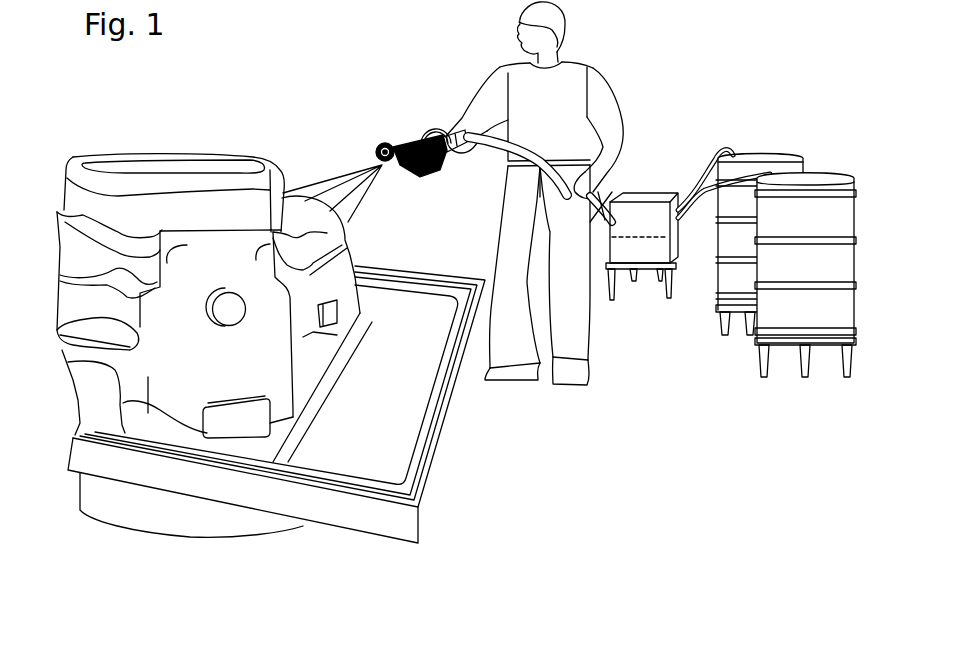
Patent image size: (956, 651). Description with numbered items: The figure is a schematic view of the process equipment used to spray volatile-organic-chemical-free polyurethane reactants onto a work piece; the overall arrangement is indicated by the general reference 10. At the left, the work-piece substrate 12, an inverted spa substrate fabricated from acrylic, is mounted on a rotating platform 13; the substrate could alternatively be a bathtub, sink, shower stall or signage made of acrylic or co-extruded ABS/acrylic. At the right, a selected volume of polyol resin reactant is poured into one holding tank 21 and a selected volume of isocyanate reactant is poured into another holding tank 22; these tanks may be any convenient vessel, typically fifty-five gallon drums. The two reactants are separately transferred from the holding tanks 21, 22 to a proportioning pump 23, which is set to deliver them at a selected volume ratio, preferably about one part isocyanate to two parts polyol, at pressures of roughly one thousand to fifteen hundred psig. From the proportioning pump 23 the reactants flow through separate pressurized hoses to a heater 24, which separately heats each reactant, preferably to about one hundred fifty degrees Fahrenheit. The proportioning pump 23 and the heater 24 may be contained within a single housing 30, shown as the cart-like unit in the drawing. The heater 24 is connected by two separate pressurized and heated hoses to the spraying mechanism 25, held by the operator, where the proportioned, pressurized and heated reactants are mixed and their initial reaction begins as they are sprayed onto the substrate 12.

The coating application system 10 is at (519, 533).
The work-piece substrate 12 is at (248, 163).
The rotating platform 13 is at (352, 523).
The holding tank 21 is at (783, 152).
The holding tank 22 is at (828, 172).
The proportioning pump 23 is at (645, 245).
The heater 24 is at (637, 210).
The spraying mechanism 25 is at (410, 122).
The single housing 30 is at (652, 286).